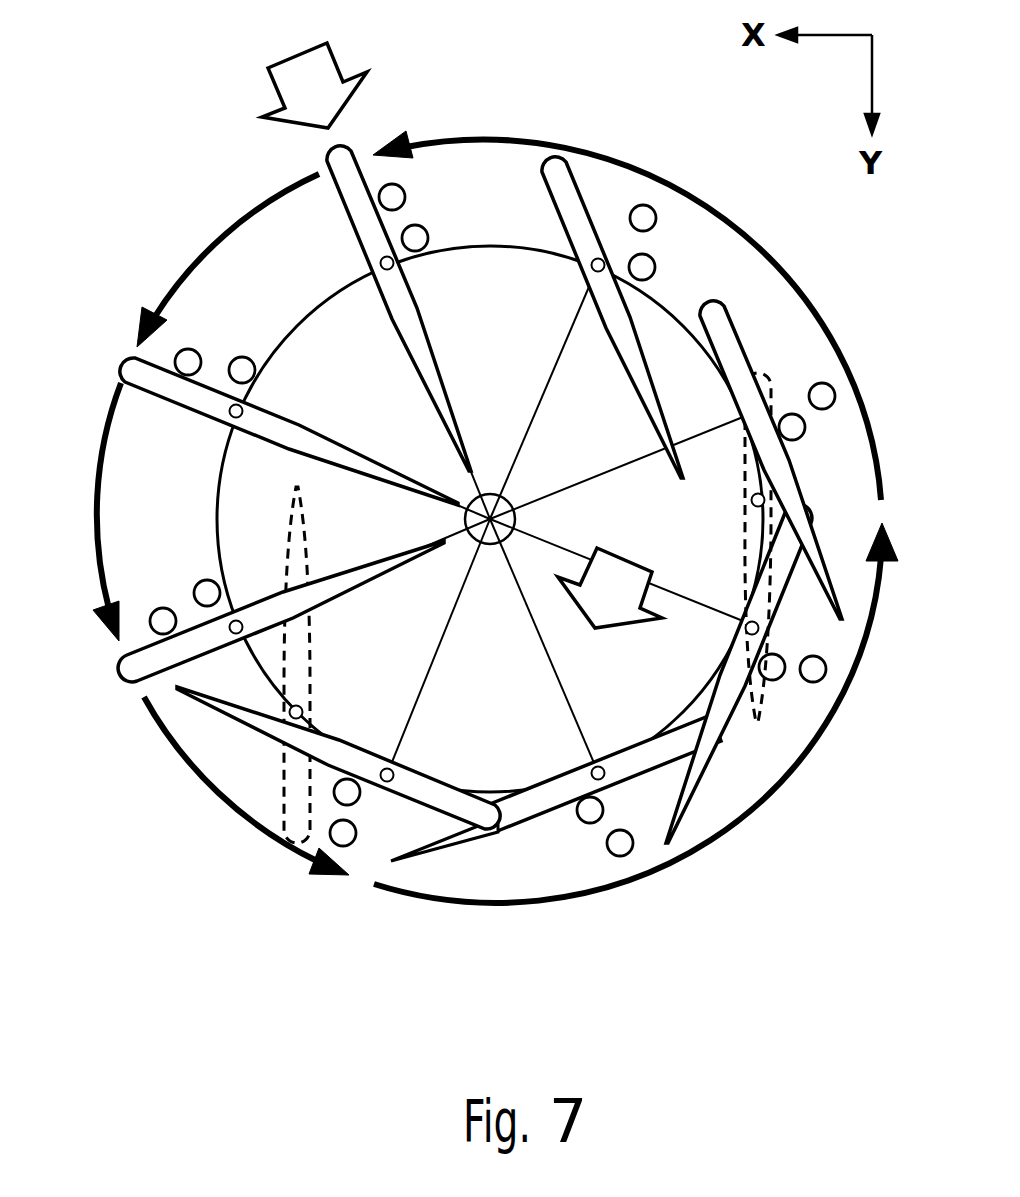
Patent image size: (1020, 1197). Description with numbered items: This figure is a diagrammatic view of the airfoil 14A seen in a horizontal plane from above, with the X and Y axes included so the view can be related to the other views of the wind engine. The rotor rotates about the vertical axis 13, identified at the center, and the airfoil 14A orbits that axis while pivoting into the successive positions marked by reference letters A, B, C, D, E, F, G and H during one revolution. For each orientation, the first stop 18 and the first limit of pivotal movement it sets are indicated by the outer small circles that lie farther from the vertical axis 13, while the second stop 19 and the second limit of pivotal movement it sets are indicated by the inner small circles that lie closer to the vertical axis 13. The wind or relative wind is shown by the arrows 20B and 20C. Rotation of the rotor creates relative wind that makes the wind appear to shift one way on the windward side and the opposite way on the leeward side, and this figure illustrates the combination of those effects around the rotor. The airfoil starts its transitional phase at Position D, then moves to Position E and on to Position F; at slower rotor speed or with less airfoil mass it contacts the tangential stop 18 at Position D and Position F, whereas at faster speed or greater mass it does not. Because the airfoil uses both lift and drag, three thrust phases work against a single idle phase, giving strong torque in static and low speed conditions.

The vertical axis 13 is at (504, 507).
The airfoil 14A is at (390, 274).
The first stop 18 is at (406, 189).
The second stop 19 is at (428, 234).
The arrow indicating wind or relative wind 20B is at (304, 67).
The arrow indicating wind or relative wind 20C is at (612, 570).
The airfoil position A is at (333, 188).
The airfoil position B is at (165, 403).
The airfoil position C is at (200, 660).
The airfoil position D is at (414, 806).
The airfoil position E is at (657, 770).
The airfoil position F is at (790, 577).
The airfoil position G is at (730, 317).
The airfoil position H is at (574, 173).